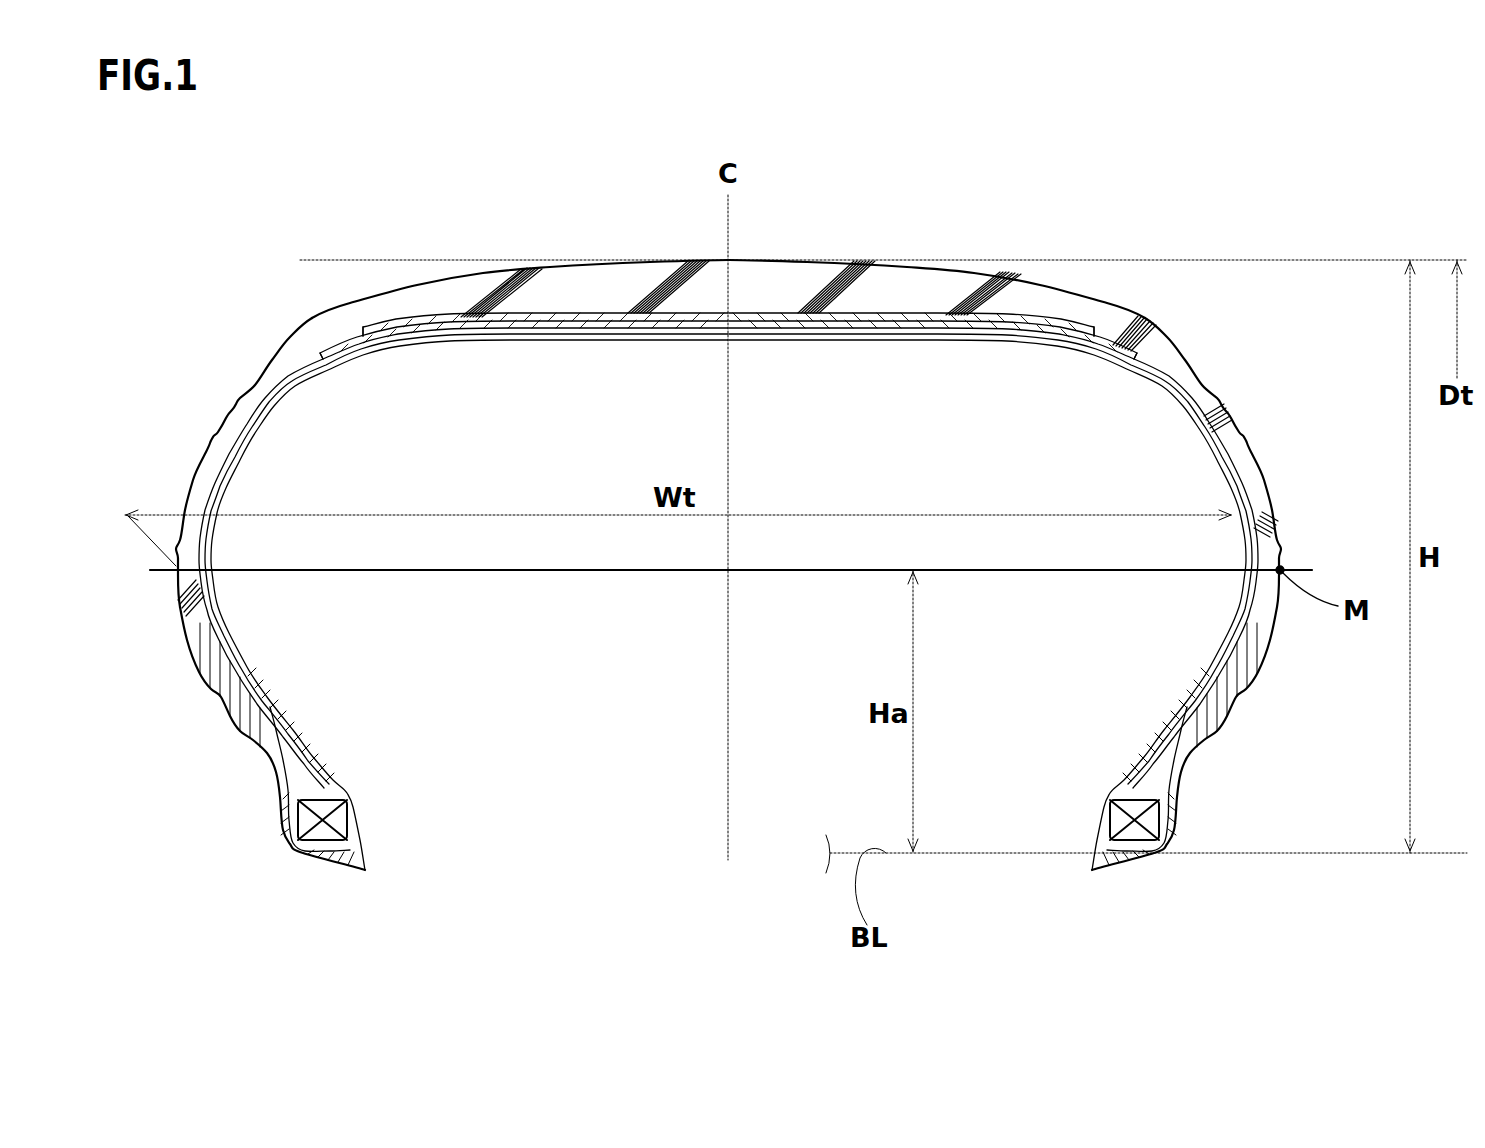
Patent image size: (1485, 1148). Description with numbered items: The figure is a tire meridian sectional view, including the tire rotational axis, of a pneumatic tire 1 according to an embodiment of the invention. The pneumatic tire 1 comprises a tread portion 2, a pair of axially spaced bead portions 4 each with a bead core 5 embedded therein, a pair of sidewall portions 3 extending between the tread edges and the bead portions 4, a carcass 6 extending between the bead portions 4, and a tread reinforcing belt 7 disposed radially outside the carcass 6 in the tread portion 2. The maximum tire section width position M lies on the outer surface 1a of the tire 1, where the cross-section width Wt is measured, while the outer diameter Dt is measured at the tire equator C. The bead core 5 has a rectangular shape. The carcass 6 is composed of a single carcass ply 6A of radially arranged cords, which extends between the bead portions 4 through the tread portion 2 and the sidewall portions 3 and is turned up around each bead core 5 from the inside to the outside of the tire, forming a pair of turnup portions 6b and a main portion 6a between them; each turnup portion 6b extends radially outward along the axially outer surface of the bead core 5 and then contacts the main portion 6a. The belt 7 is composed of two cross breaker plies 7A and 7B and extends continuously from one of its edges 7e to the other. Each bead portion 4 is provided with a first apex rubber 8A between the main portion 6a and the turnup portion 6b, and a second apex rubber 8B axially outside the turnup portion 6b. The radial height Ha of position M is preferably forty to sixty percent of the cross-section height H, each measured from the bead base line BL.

The pneumatic tire 1 is at (1290, 223).
The outer surface 1a is at (1260, 470).
The tread portion 2 is at (971, 250).
The sidewall portion 3 is at (1328, 543).
The bead portion 4 is at (239, 790).
The bead core 5 is at (333, 820).
The carcass 6 is at (1207, 447).
The carcass ply 6A is at (1013, 632).
The main portion 6a is at (1193, 687).
The turnup portion 6b is at (1175, 722).
The belt 7 is at (966, 410).
The breaker ply 7A is at (940, 318).
The breaker ply 7B is at (863, 320).
The belt edge 7e is at (322, 357).
The first apex rubber 8A is at (1160, 780).
The second apex rubber 8B is at (1207, 657).